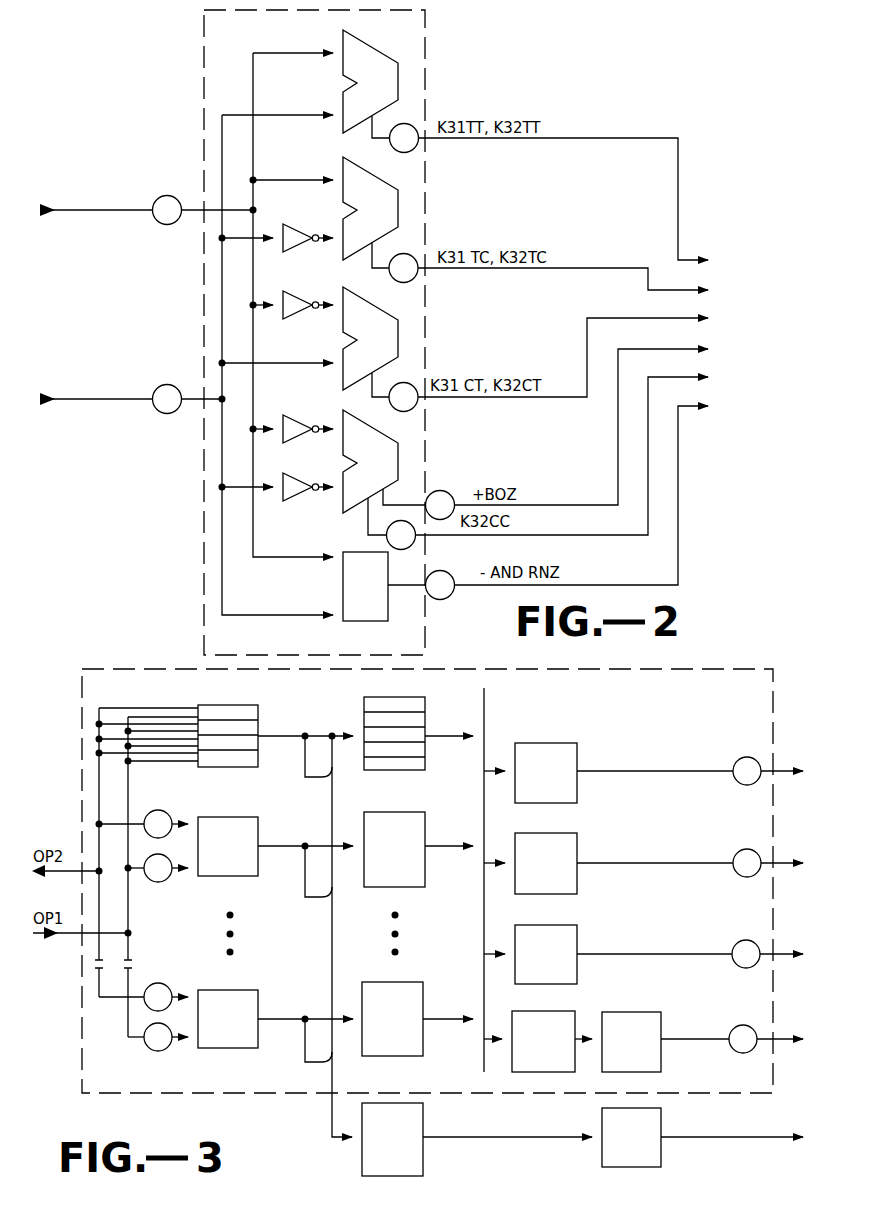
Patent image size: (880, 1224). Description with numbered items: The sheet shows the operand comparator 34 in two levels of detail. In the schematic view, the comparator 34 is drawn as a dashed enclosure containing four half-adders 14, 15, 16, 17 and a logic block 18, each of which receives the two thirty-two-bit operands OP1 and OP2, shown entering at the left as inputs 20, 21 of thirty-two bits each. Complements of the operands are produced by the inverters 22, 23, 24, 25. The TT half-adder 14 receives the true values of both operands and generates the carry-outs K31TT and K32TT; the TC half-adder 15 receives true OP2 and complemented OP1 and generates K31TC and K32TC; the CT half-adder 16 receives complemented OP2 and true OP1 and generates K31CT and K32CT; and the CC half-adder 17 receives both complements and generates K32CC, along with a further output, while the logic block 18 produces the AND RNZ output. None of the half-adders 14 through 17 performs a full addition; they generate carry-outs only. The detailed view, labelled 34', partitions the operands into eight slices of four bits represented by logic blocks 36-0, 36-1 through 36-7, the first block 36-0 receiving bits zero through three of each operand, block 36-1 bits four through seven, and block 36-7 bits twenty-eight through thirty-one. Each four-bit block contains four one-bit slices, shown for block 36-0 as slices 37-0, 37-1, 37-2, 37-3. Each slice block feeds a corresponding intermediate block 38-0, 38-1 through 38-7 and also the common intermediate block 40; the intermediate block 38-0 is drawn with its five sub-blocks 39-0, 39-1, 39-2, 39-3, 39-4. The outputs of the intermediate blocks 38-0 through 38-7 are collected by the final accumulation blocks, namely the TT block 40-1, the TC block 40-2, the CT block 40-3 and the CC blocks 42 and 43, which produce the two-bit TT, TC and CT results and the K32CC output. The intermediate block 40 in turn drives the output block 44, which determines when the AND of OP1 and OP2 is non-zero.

In FIG. 2, the TT half-adder 14 is at (372, 57).
In FIG. 2, the TC half-adder 15 is at (383, 192).
In FIG. 2, the CT half-adder 16 is at (378, 318).
In FIG. 2, the CC half-adder 17 is at (383, 445).
In FIG. 2, the logic block 18 is at (348, 618).
In FIG. 2, the OP2 operand input 20 is at (99, 218).
In FIG. 2, the OP1 operand input 21 is at (113, 406).
In FIG. 2, the inverter 22 is at (291, 226).
In FIG. 2, the inverter 23 is at (291, 297).
In FIG. 2, the inverter 24 is at (292, 420).
In FIG. 2, the inverter 25 is at (291, 478).
In FIG. 2, the operand comparator 34 is at (335, 331).
In FIG. 3, the comparison logic circuit (alternate embodiment) 34' is at (427, 866).
In FIG. 3, the 4-bit slice logic block 36-0 is at (238, 698).
In FIG. 3, the 4-bit slice logic block 36-1 is at (230, 815).
In FIG. 3, the 4-bit slice logic block 36-7 is at (230, 988).
In FIG. 3, the 1-bit slice 37-0 is at (252, 713).
In FIG. 3, the 1-bit slice 37-1 is at (252, 730).
In FIG. 3, the 1-bit slice 37-2 is at (252, 742).
In FIG. 3, the 1-bit slice 37-3 is at (250, 762).
In FIG. 3, the intermediate block 38-0 is at (391, 695).
In FIG. 3, the intermediate block 38-1 is at (397, 810).
In FIG. 3, the intermediate block 38-7 is at (394, 980).
In FIG. 3, the sub-block 39-0 is at (415, 707).
In FIG. 3, the sub-block 39-1 is at (414, 722).
In FIG. 3, the sub-block 39-2 is at (415, 740).
In FIG. 3, the sub-block 39-3 is at (415, 756).
In FIG. 3, the sub-block 39-4 is at (418, 770).
In FIG. 3, the intermediate block 40 is at (419, 1130).
In FIG. 3, the TT block 40-1 is at (553, 742).
In FIG. 3, the TC block 40-2 is at (575, 838).
In FIG. 3, the CT block 40-3 is at (567, 928).
In FIG. 3, the CC block 42 is at (556, 1011).
In FIG. 3, the CC block 43 is at (637, 1012).
In FIG. 3, the output block 44 is at (651, 1110).